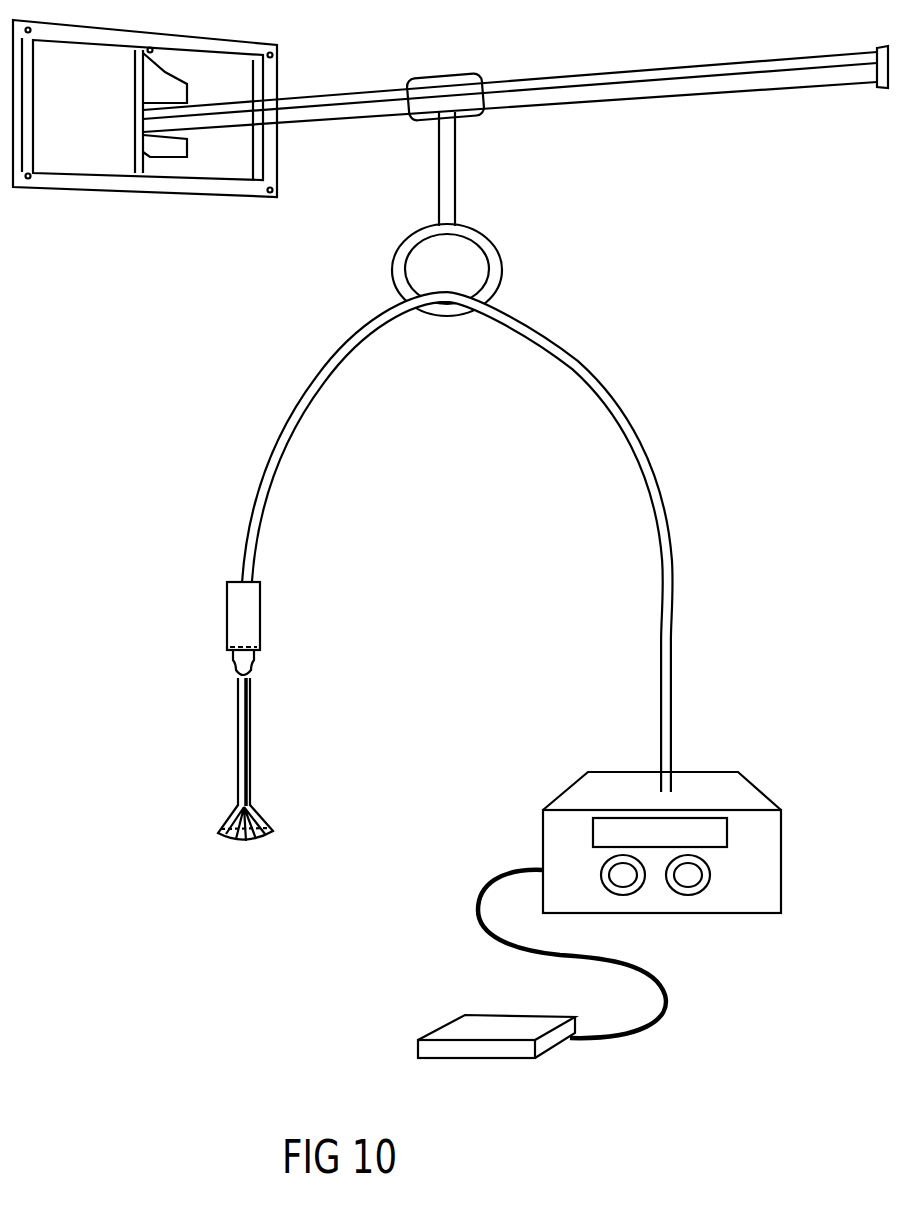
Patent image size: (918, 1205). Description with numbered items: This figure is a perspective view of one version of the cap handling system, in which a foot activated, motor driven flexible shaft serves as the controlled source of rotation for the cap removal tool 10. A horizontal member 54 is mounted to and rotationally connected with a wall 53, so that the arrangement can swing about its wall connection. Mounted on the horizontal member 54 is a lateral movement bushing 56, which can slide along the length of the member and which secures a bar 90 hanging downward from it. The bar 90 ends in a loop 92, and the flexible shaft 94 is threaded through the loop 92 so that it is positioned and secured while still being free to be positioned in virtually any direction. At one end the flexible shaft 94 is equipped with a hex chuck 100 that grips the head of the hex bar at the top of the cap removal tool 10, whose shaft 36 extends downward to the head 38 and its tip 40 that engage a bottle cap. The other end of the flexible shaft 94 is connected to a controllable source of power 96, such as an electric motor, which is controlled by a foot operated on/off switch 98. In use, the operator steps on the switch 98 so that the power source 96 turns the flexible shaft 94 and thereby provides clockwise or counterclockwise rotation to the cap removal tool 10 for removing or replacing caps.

The cap removal tool 10 is at (239, 711).
The shaft 36 is at (250, 735).
The applicator head 38 is at (267, 815).
The applicator tip edge 40 is at (217, 837).
The wall 53 is at (145, 108).
The horizontal member 54 is at (742, 62).
The bushing 56 is at (452, 78).
The bar 90 is at (460, 160).
The loop 92 is at (390, 267).
The flexible shaft 94 is at (640, 439).
The controllable source of power 96 is at (738, 787).
The foot operated on/off switch 98 is at (500, 1050).
The hex chuck 100 is at (257, 667).